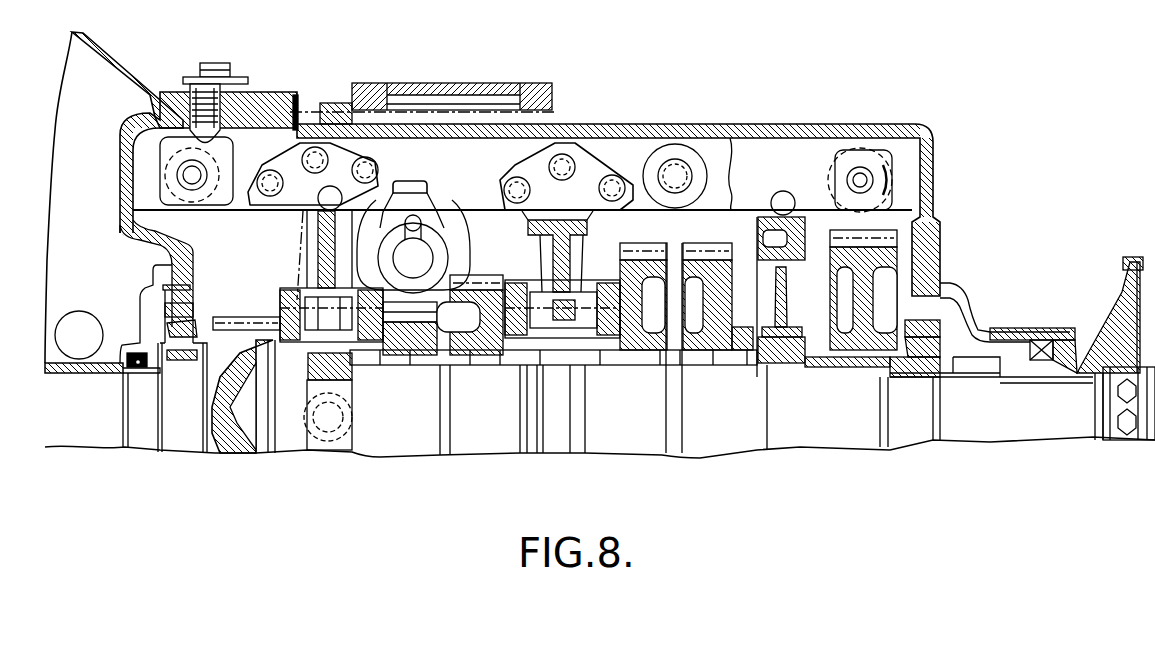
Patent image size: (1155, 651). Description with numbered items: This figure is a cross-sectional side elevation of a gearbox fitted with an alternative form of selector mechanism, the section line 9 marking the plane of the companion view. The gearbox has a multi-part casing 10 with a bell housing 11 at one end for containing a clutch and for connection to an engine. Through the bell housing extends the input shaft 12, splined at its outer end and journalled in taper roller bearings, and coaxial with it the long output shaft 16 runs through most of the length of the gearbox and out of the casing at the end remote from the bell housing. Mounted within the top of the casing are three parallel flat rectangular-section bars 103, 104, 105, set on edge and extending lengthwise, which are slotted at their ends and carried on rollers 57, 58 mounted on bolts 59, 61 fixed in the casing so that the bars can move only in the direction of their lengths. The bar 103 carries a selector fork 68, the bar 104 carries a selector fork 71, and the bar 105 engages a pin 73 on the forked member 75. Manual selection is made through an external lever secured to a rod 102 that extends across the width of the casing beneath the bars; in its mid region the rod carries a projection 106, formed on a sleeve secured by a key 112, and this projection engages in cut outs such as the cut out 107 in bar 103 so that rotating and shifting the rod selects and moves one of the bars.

The section line 9- 9 is at (412, 80).
The casing 10 is at (708, 130).
The bell housing 11 is at (102, 60).
The input shaft 12 is at (92, 420).
The output shaft 16 is at (983, 417).
The roller 57 is at (188, 178).
The roller 58 is at (872, 178).
The bolt 59 is at (210, 163).
The bolt 61 is at (868, 183).
The selector fork 68 is at (287, 220).
The selector fork 71 is at (593, 172).
The pin 73 is at (777, 197).
The forked member 75 is at (765, 277).
The rod 102 is at (415, 260).
The bar 103 is at (233, 192).
The bar 104 is at (630, 160).
The bar 105 is at (787, 160).
The projection 106 is at (413, 193).
The cut out 107 is at (403, 181).
The key 112 is at (421, 235).